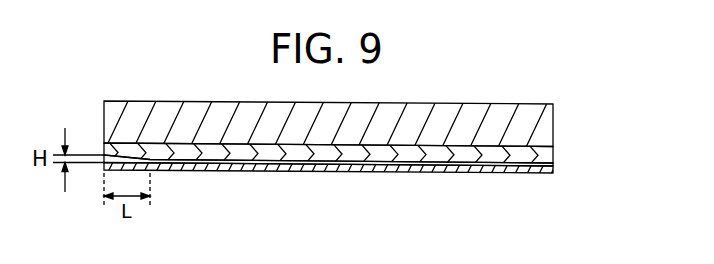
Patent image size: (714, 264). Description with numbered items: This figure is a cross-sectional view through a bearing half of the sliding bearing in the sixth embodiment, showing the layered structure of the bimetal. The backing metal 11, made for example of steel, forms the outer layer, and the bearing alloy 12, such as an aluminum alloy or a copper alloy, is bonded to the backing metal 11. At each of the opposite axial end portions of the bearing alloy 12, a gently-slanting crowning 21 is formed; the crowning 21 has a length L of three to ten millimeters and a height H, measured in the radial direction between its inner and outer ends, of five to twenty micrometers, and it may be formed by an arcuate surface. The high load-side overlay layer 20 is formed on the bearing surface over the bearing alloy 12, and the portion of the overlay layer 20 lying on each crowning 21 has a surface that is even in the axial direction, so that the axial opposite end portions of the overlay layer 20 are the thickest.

The backing metal 11 is at (544, 118).
The bearing alloy 12 is at (543, 155).
The high load-side overlay layer 20 is at (408, 172).
The crowning 21 is at (532, 168).